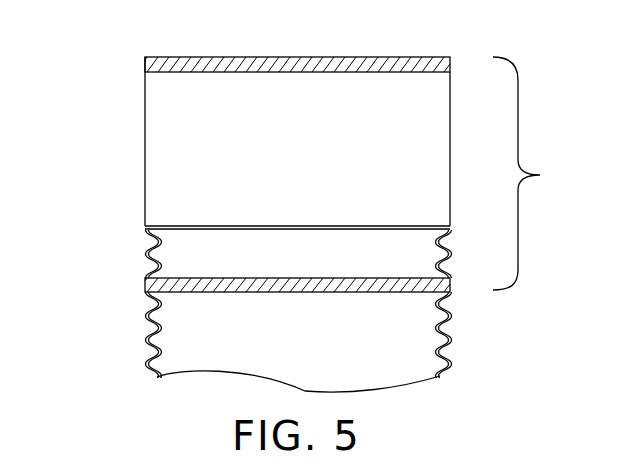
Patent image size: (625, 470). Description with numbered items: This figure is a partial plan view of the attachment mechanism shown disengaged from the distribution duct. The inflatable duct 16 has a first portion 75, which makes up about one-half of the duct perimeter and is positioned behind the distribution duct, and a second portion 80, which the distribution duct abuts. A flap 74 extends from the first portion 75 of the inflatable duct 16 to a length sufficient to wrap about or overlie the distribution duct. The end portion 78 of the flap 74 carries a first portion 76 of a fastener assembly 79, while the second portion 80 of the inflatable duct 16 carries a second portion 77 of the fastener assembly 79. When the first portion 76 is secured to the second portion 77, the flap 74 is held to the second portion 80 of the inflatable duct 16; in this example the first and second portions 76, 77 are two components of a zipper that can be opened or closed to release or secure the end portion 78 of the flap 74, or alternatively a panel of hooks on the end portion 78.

The inflatable duct 16 is at (440, 345).
The flap 74 is at (450, 163).
The first portion 75 is at (138, 250).
The first portion of fastener assembly 76 is at (172, 65).
The second portion of fastener assembly 77 is at (157, 300).
The end portion 78 is at (141, 69).
The fastener assembly 79 is at (534, 173).
The second portion 80 is at (226, 304).